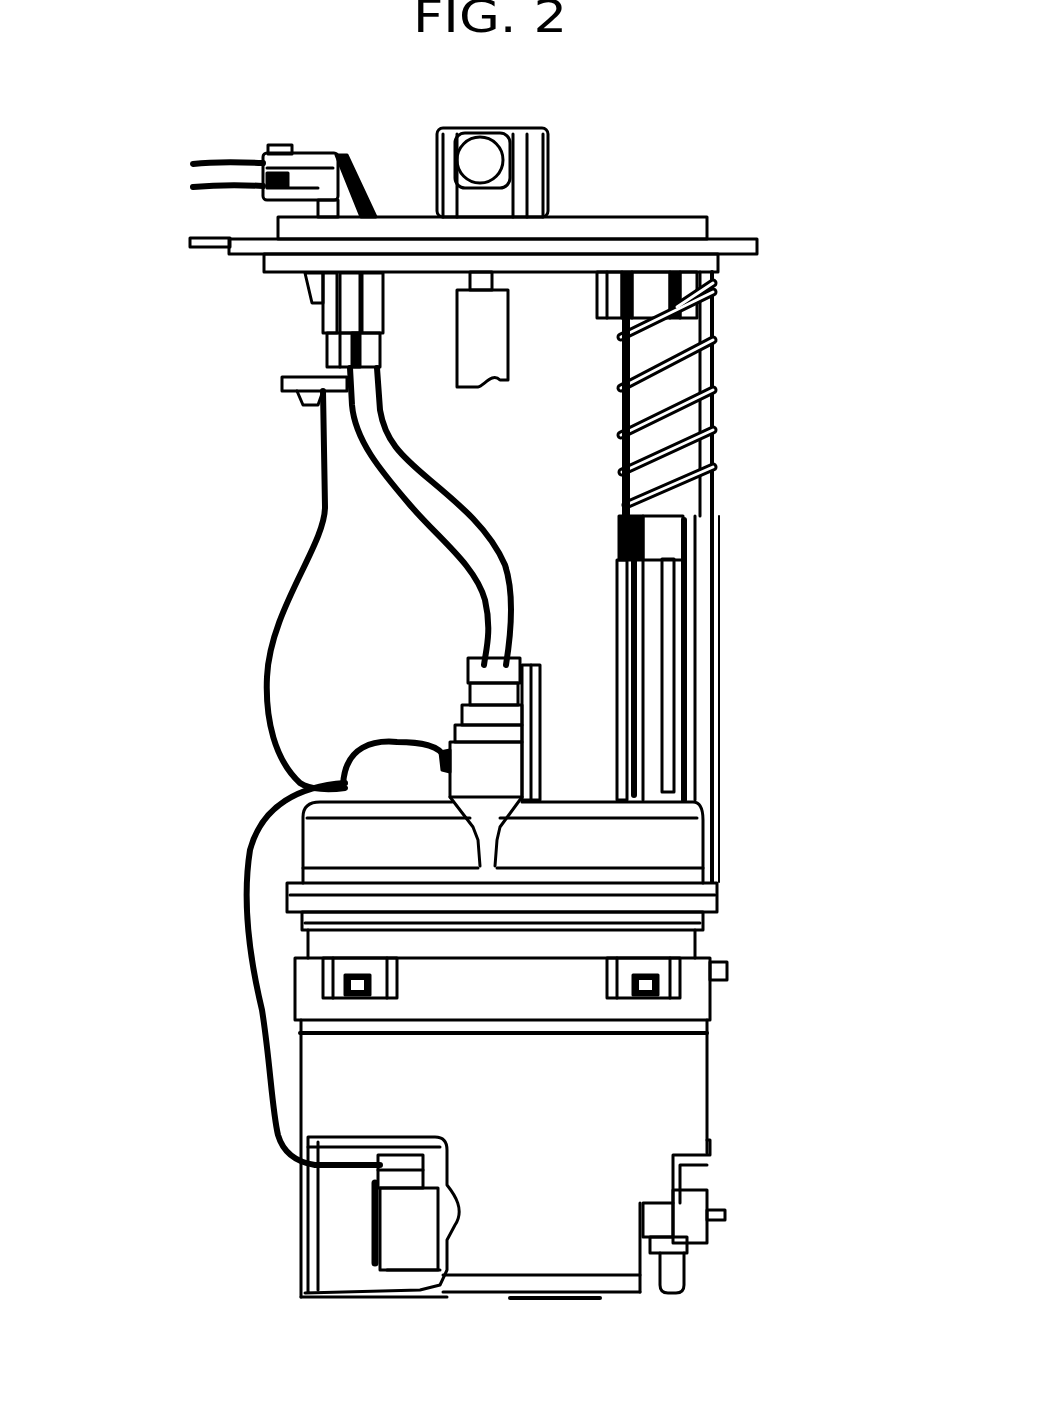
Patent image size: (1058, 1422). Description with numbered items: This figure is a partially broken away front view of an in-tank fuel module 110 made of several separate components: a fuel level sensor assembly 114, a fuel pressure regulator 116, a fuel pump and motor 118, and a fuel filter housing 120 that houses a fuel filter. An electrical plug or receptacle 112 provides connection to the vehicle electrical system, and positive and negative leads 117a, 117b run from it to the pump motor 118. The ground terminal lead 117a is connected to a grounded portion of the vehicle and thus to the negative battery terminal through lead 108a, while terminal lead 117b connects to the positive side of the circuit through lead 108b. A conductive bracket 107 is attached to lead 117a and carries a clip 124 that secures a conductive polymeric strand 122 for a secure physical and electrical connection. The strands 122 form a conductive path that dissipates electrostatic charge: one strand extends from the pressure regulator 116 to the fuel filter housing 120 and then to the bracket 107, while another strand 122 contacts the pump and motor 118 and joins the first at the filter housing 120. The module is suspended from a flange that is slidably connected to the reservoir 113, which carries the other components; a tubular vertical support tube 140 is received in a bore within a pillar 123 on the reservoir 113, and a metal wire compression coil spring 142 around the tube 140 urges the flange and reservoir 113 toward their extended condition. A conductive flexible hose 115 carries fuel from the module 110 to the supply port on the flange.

The conductive bracket 107 is at (300, 377).
The lead 108a is at (220, 192).
The lead 108b is at (222, 162).
The fuel module 110 is at (738, 456).
The electrical plug or receptacle 112 is at (383, 303).
The reservoir 113 is at (601, 664).
The fuel level sensor assembly 114 is at (710, 1190).
The flexible hose 115 is at (508, 335).
The fuel pressure regulator 116 is at (417, 1203).
The ground terminal lead 117a is at (458, 565).
The terminal lead 117b is at (461, 500).
The fuel pump and motor 118 is at (463, 784).
The fuel filter housing 120 is at (695, 835).
The conductive plastic or polymeric strands 122 is at (265, 643).
The pillars 123 is at (665, 530).
The clip 124 is at (295, 398).
The tubular vertical support tubes 140 is at (625, 396).
The metal wire compression coil spring 142 is at (625, 470).